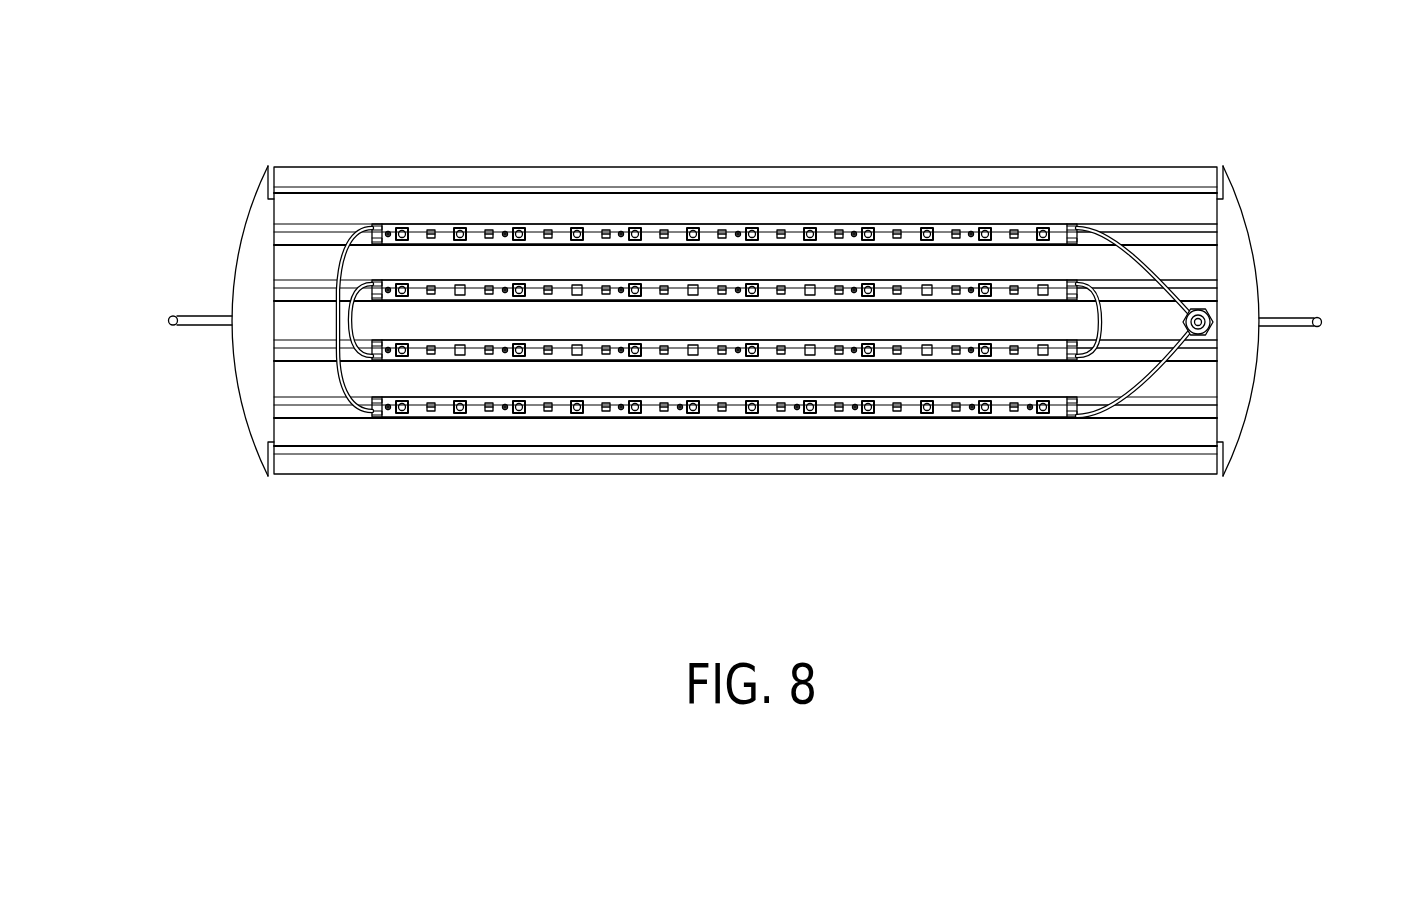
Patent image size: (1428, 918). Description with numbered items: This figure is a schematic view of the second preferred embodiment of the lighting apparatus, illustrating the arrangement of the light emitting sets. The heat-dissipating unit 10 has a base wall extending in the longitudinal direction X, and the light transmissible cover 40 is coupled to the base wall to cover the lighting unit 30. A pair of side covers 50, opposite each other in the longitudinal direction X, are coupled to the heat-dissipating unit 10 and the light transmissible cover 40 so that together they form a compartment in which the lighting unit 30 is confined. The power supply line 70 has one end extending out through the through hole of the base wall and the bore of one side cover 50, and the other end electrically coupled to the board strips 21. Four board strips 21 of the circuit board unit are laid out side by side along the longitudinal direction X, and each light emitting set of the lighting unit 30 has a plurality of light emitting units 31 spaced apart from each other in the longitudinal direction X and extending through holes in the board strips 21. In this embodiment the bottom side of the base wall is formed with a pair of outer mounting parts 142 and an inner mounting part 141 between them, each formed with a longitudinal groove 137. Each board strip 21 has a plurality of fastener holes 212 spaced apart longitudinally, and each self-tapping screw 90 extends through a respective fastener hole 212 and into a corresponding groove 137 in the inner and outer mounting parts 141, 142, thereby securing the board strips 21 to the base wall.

The heat-dissipating unit 10 is at (739, 148).
The light transmissible cover 40 is at (318, 178).
The side cover 50 is at (1243, 184).
The power supply line 70 is at (1322, 322).
The longitudinal direction X is at (165, 320).
The groove 137 is at (1150, 230).
The inner mounting part 141 is at (1207, 287).
The outer mounting part 142 is at (1210, 232).
The board strip 21 is at (446, 224).
The lighting unit 30 is at (984, 208).
The light emitting unit 31 is at (927, 227).
The self-tapping screw 90 is at (505, 231).
The fastener hole 212 is at (797, 411).